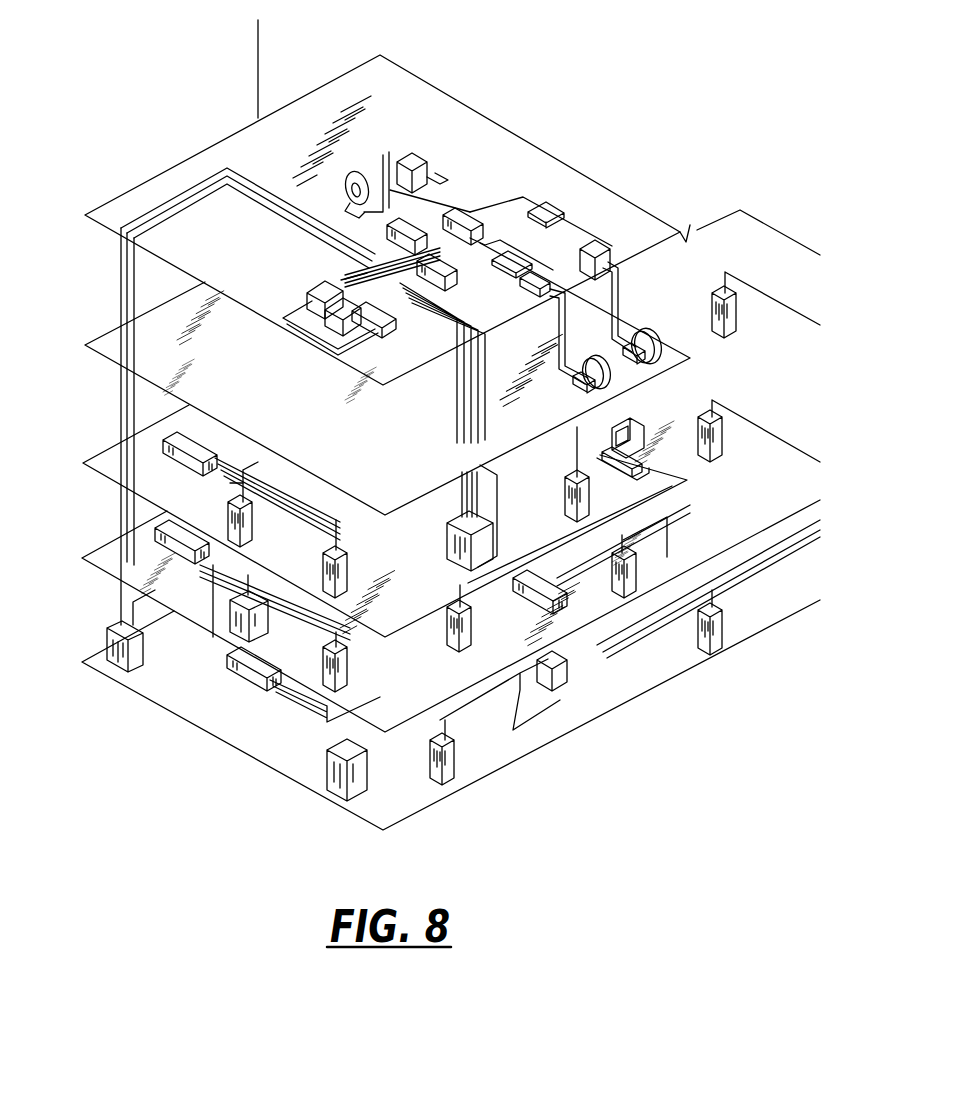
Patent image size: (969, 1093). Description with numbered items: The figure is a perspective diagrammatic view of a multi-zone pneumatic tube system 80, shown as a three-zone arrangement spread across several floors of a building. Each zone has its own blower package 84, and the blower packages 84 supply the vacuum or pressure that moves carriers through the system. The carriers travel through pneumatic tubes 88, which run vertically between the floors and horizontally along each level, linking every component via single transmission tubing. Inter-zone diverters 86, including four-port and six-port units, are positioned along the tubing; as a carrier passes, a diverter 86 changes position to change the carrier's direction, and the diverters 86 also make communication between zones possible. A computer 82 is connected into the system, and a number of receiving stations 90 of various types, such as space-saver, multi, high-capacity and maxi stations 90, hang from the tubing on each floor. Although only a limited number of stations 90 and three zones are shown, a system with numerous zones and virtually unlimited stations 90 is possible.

The pneumatic tube system 80 is at (452, 86).
The computer 82 is at (615, 425).
The blower package 84 is at (583, 405).
The inter-zone diverter 86 is at (573, 765).
The pneumatic tube 88 is at (357, 750).
The receiving station 90 is at (224, 502).